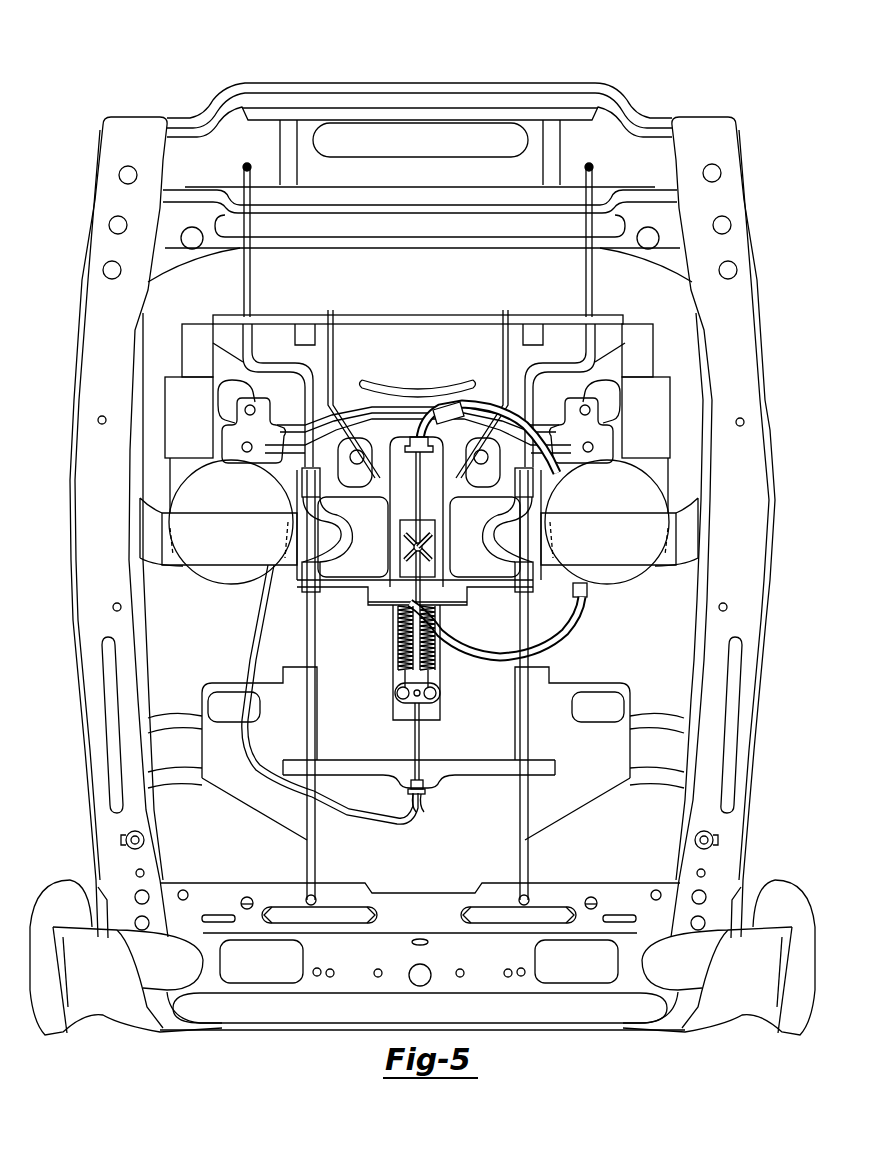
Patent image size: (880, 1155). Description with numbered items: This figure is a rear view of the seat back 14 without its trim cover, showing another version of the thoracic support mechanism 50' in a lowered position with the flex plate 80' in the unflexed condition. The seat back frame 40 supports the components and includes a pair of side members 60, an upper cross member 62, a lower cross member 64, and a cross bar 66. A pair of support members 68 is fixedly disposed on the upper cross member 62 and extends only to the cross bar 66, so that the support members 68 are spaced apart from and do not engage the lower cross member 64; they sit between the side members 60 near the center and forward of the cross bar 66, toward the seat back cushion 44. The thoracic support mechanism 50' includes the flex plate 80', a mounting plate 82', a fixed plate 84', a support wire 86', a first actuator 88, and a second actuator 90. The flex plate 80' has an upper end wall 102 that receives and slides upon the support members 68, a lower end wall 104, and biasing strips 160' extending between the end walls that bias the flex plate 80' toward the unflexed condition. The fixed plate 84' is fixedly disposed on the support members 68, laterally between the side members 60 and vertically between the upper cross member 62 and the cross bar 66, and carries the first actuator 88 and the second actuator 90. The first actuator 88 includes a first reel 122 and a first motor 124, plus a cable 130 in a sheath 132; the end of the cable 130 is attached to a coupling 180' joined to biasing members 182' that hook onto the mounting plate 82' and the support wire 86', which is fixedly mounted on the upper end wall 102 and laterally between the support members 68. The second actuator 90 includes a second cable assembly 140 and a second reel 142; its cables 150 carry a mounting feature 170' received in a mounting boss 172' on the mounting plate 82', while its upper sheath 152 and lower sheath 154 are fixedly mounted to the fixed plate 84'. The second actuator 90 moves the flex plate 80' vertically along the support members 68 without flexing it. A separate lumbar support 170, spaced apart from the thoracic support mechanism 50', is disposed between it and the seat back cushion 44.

The seat back frame 40 is at (108, 104).
The seat back 14 is at (757, 119).
The side members 60 is at (118, 501).
The upper cross member 62 is at (248, 97).
The seat back cushion 44 is at (655, 298).
The support members 68 is at (250, 298).
The upper end wall 102 is at (412, 315).
The flex plate 80' is at (419, 556).
The support wire 86' is at (418, 394).
The thoracic support mechanism 50' is at (439, 365).
The fixed plate 84' is at (191, 430).
The first actuator 88 is at (159, 398).
The first motor 124 is at (210, 428).
The second actuator 90 is at (673, 396).
The second cable assembly 140 is at (664, 428).
The first reel 122 is at (247, 510).
The second reel 142 is at (630, 508).
The upper sheath 152 is at (484, 408).
The cables 150 is at (397, 568).
The mounting plate 82' is at (416, 533).
The mounting feature 170' is at (456, 528).
The mounting boss 172' is at (462, 525).
The lower sheath 154 is at (568, 624).
The biasing members 182' is at (391, 646).
The coupling 180' is at (394, 676).
The cable 130 is at (422, 750).
The sheath 132 is at (262, 785).
The biasing strips 160' is at (417, 686).
The lower end wall 104 is at (303, 782).
The lumbar support 170 is at (599, 727).
The lower cross member 64 is at (437, 883).
The cross bar 66 is at (440, 919).